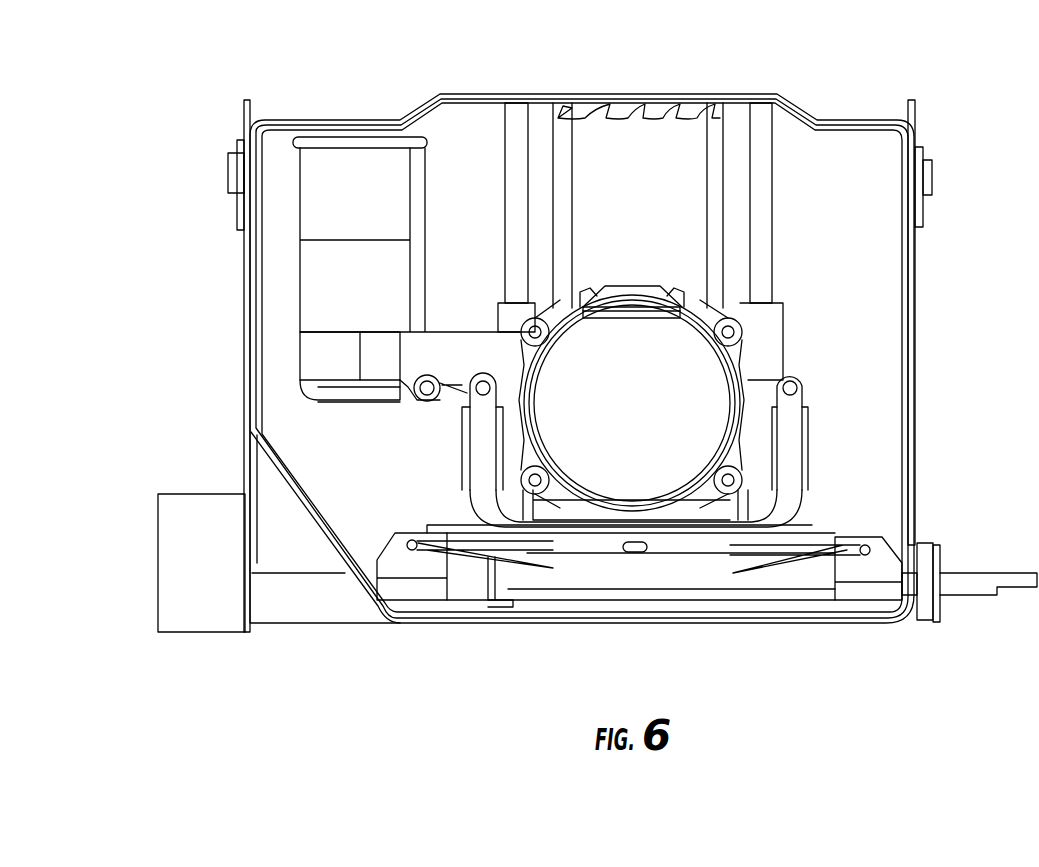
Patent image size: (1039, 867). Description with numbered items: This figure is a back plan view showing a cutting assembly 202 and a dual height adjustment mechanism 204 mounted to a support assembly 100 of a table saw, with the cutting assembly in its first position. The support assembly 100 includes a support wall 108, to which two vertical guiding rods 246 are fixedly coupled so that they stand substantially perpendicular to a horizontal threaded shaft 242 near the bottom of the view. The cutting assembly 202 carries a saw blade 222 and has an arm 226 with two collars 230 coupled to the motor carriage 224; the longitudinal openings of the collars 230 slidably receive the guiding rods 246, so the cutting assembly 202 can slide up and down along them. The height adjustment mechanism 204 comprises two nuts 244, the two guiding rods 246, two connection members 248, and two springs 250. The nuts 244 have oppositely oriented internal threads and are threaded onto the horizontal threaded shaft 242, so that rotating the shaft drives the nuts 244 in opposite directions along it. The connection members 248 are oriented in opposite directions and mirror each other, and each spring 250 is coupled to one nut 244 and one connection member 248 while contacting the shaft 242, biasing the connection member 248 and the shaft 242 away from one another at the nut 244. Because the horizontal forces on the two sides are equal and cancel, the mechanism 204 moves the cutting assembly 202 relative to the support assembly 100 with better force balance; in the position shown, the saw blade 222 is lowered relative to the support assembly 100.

The support assembly 100 is at (214, 103).
The support wall 108 is at (882, 405).
The cutting assembly 202 is at (805, 243).
The height adjustment mechanism 204 is at (822, 700).
The saw blade 222 is at (672, 148).
The motor carriage 224 is at (748, 396).
The arm 226 is at (356, 316).
The collar 230 is at (498, 300).
The horizontal threaded shaft 242 is at (632, 583).
The nut 244 is at (408, 590).
The vertical guiding rod 246 is at (508, 128).
The connection member 248 is at (485, 477).
The spring 250 is at (456, 580).